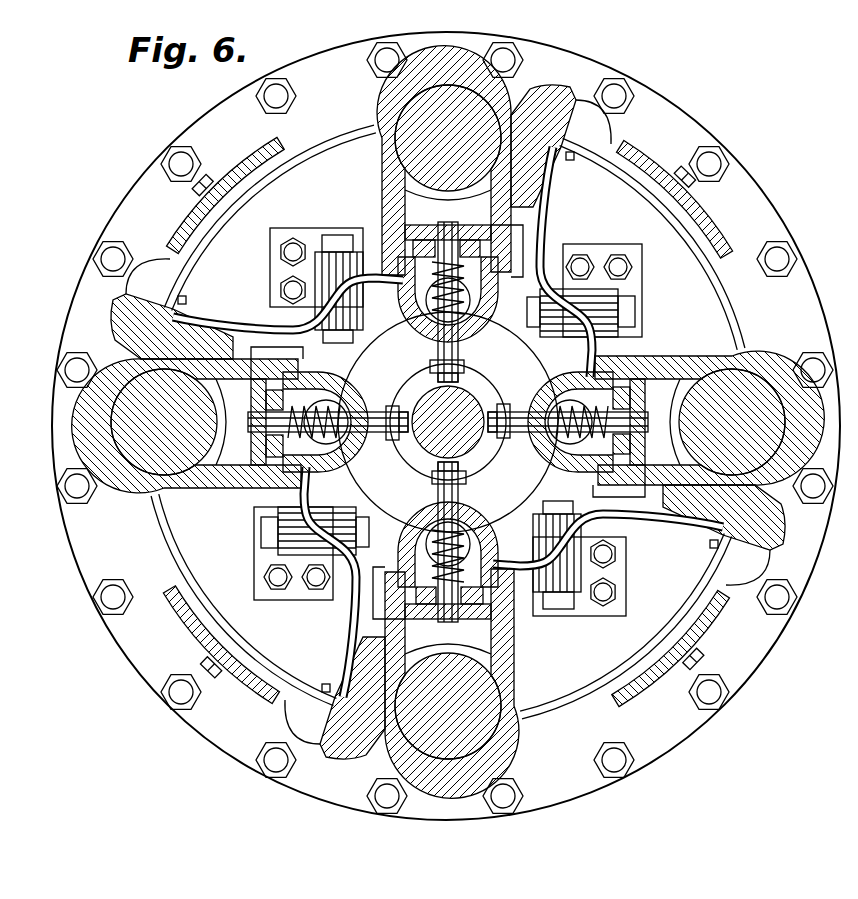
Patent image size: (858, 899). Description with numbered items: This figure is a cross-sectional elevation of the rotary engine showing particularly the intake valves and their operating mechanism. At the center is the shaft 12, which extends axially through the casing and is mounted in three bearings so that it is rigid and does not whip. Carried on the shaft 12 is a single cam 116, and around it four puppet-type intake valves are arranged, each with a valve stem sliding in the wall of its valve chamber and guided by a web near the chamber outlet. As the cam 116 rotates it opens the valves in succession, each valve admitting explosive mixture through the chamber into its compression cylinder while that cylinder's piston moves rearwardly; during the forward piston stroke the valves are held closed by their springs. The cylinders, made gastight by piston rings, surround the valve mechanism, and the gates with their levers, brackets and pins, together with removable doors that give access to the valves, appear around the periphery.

The shaft 12 is at (470, 388).
The cam 116 is at (414, 390).